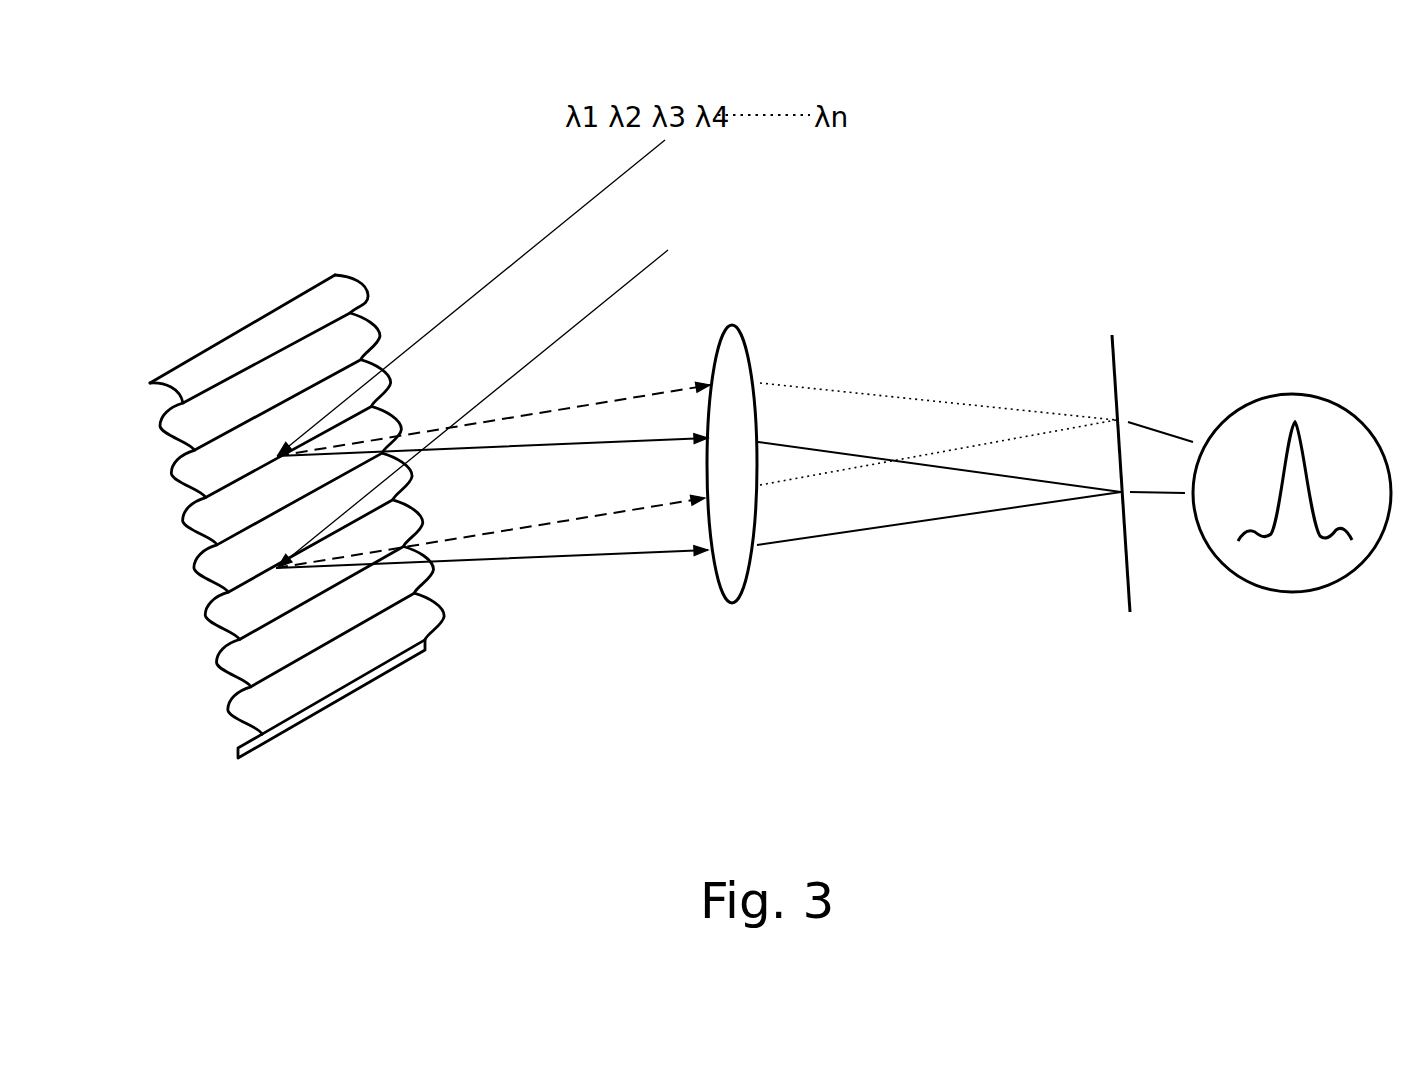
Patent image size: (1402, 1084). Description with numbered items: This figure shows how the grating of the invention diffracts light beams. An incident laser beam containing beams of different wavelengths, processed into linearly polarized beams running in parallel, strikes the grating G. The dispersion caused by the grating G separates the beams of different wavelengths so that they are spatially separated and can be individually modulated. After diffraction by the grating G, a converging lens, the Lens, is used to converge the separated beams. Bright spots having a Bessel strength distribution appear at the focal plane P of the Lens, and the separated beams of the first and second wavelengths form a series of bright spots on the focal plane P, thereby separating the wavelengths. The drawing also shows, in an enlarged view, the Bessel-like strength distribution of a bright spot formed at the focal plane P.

The grating G is at (228, 716).
The lens Lens is at (722, 592).
The focal plane P is at (1128, 577).